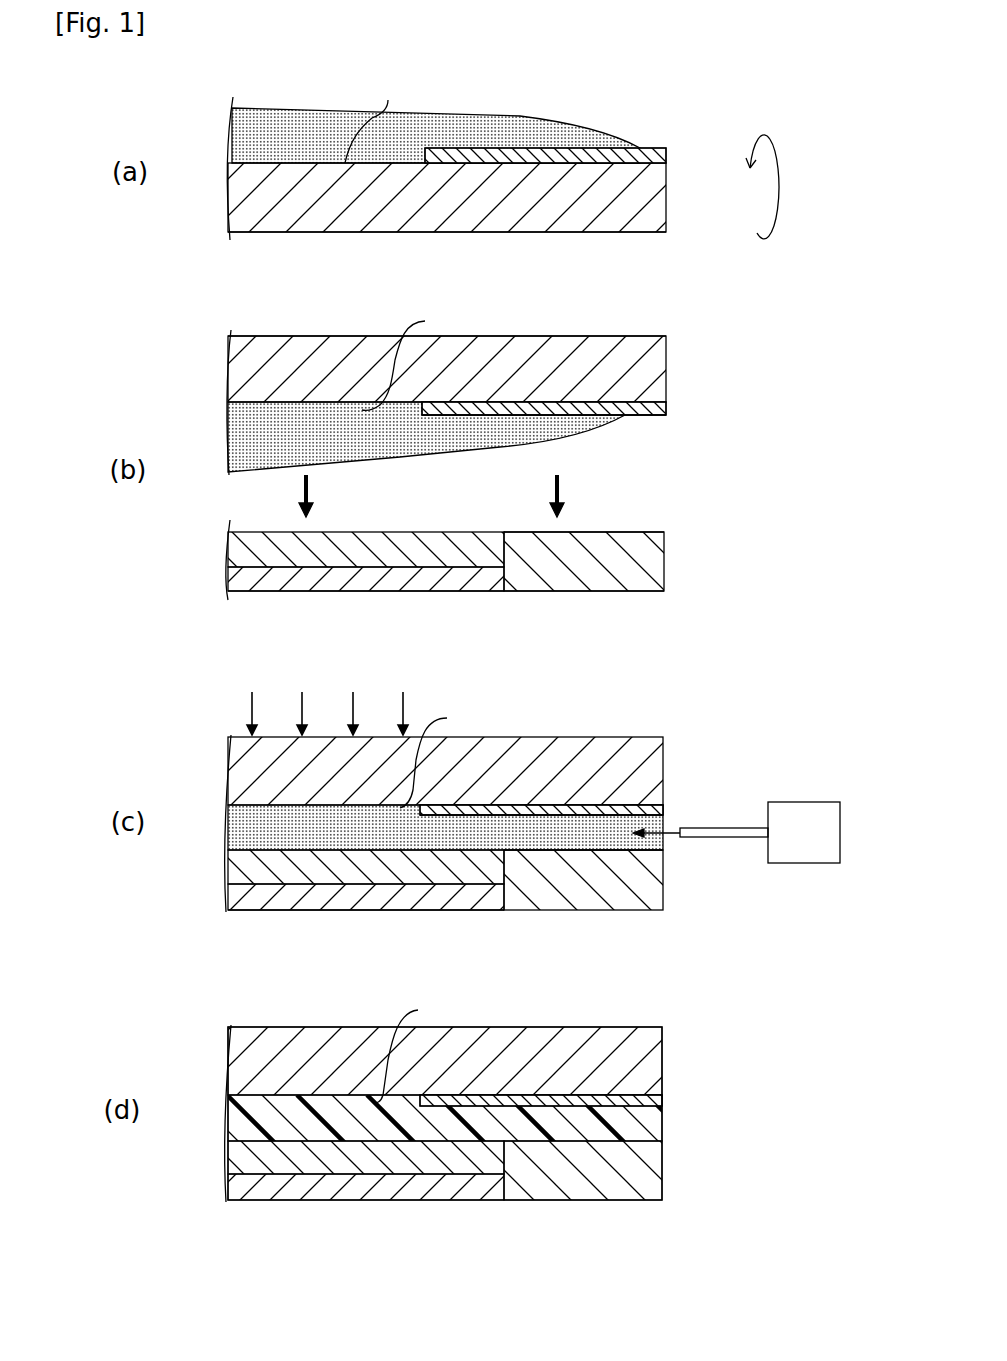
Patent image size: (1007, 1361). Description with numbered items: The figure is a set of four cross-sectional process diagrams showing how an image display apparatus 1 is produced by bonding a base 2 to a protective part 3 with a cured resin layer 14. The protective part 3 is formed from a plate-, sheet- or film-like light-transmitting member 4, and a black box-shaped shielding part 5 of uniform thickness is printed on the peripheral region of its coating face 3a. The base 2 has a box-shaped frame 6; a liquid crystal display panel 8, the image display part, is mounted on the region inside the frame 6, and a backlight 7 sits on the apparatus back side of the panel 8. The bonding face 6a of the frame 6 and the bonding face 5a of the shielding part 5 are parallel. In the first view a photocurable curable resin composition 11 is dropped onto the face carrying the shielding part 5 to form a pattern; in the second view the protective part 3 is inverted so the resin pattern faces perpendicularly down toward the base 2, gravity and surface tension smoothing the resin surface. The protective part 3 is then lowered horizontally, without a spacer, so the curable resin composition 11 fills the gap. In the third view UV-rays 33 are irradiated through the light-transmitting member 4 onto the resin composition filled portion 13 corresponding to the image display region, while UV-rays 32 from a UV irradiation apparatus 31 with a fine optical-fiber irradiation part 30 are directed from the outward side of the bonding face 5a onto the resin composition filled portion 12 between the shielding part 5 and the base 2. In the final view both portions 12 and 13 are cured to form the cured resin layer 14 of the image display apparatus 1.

The image display apparatus 1 is at (147, 1017).
The base 2 is at (558, 598).
The protective part 3 is at (654, 120).
The coating face 3a is at (410, 588).
The light-transmitting member 4 is at (668, 190).
The shielding part 5 is at (668, 155).
The bonding face of the shielding part 5a is at (645, 415).
The frame 6 is at (666, 560).
The bonding face of the frame 6a is at (585, 532).
The backlight 7 is at (440, 592).
The liquid crystal display panel 8 is at (405, 532).
The curable resin composition 11 is at (460, 112).
The resin composition filled portion between the shielding part and the base 12 is at (540, 825).
The resin composition filled portion corresponding to the image display region 13 is at (290, 845).
The cured resin layer 14 is at (300, 1117).
The fine irradiation part 30 is at (728, 838).
The UV irradiation apparatus 31 is at (790, 802).
The UV-rays 32 is at (682, 830).
The UV-rays 33 is at (250, 706).